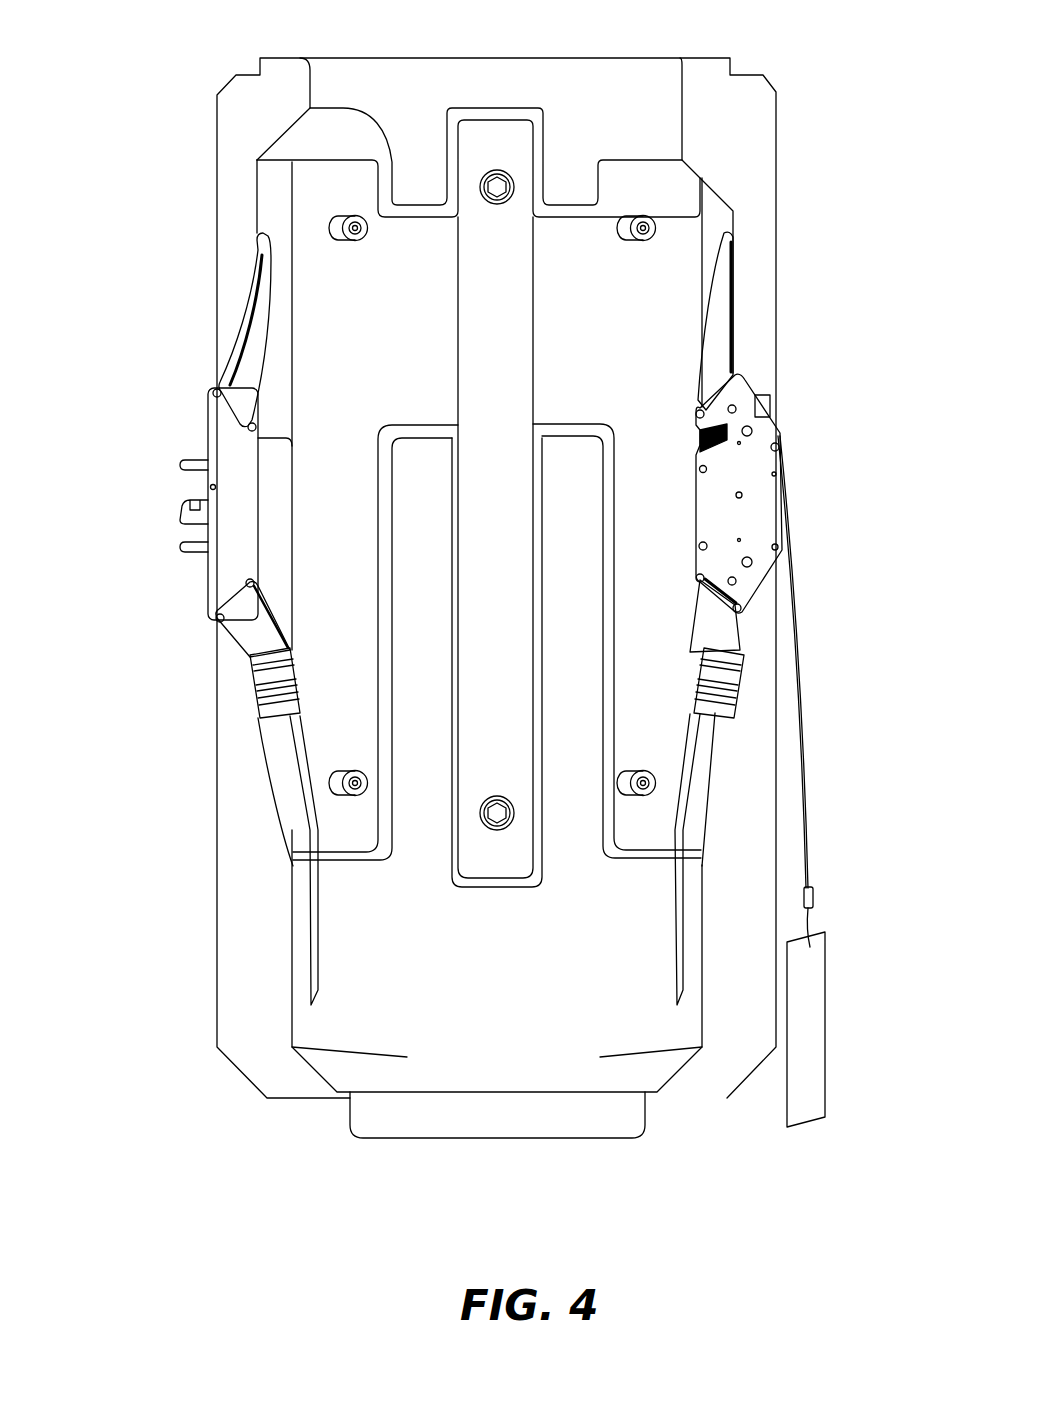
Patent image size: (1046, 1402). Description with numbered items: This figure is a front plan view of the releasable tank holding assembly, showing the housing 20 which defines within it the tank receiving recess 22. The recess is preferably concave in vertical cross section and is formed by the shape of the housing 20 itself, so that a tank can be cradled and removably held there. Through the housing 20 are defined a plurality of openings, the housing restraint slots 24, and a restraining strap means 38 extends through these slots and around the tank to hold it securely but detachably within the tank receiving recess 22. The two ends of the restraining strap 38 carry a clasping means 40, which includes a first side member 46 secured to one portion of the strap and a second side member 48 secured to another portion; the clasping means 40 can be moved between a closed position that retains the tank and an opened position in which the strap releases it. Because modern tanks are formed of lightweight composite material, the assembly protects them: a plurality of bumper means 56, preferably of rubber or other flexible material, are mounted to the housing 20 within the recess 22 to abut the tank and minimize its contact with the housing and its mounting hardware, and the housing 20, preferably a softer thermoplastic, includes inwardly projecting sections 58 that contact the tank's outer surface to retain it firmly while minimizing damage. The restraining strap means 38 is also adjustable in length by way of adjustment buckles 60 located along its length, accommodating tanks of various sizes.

The housing 20 is at (763, 80).
The tank receiving recess 22 is at (518, 978).
The housing restraint slots 24 is at (256, 232).
The restraining strap means 38 is at (717, 347).
The clasping means 40 is at (752, 422).
The first side member 46 is at (763, 513).
The second side member 48 is at (220, 568).
The bumper means 56 is at (632, 236).
The inwardly projecting sections 58 is at (293, 1012).
The adjustment buckles 60 is at (253, 682).